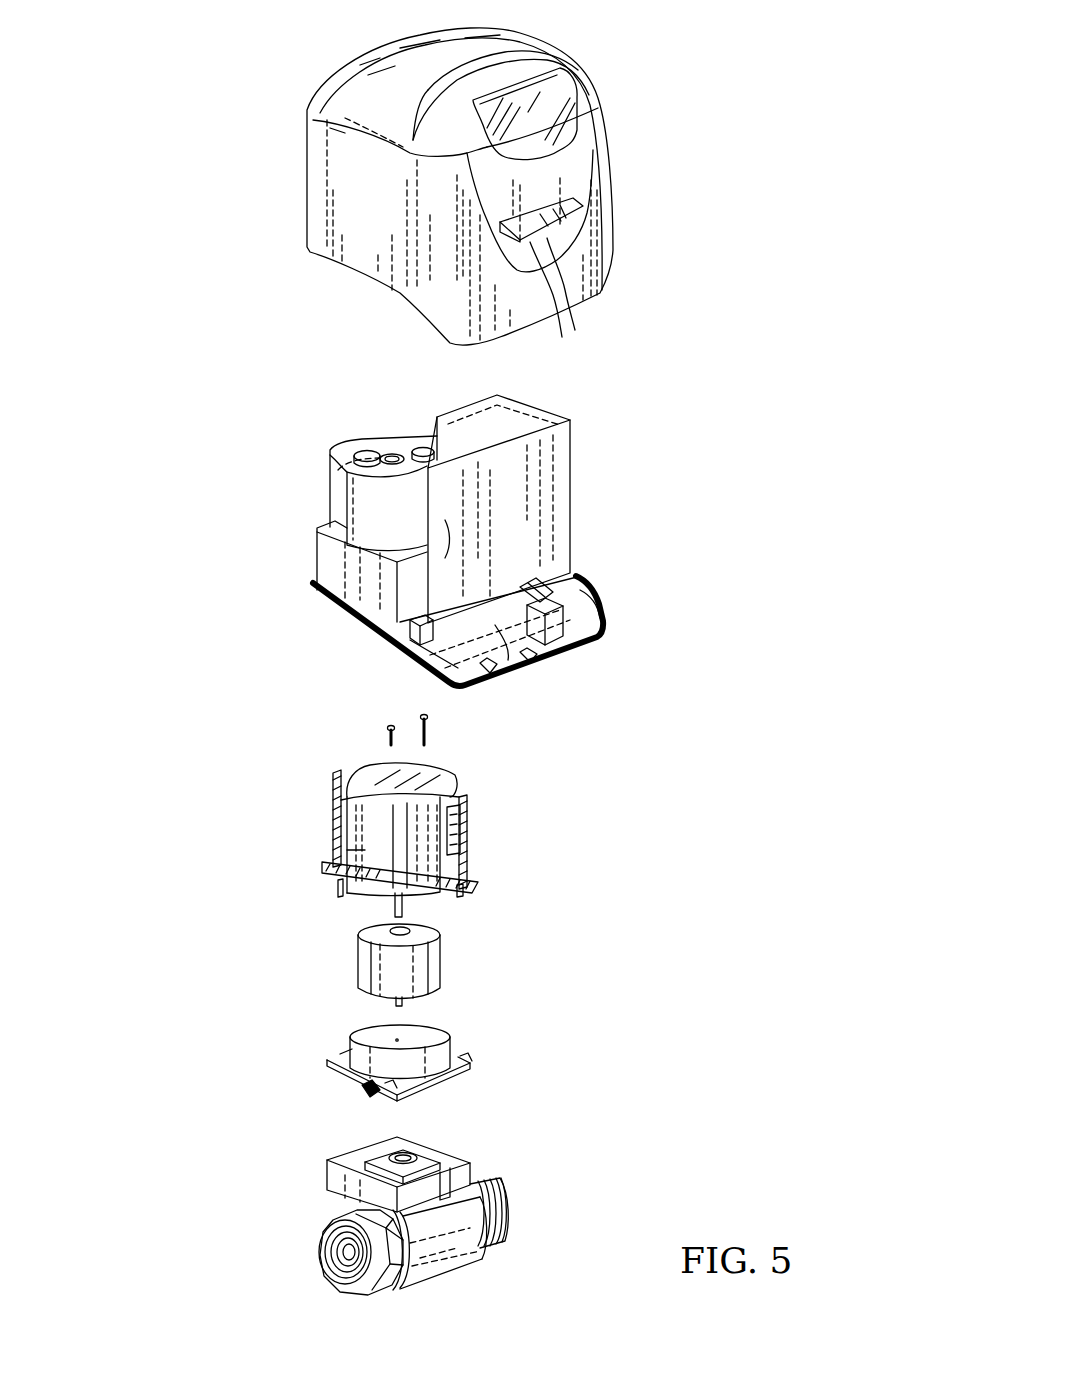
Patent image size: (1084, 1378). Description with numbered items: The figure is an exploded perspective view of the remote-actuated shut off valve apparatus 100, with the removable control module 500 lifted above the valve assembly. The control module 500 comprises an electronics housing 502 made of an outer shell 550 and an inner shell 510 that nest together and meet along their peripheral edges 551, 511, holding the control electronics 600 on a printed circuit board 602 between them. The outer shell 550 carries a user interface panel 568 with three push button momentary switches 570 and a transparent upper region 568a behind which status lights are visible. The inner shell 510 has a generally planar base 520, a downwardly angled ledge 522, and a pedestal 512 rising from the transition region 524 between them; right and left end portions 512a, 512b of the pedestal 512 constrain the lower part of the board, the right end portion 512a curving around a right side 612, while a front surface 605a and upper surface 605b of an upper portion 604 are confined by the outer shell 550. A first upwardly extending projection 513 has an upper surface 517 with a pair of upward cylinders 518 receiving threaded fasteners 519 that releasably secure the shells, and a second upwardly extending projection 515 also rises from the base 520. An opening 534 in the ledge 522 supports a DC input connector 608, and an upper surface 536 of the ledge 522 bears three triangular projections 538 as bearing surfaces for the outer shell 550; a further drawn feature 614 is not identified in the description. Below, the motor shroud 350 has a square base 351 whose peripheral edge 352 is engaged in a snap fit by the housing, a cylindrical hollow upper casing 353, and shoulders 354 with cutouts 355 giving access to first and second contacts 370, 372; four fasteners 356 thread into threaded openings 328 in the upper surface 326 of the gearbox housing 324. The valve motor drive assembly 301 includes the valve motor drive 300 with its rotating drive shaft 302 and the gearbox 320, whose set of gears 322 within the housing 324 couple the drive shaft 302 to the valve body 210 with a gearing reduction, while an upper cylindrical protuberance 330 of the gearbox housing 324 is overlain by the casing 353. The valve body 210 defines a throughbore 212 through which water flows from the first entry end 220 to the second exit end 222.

The remote-actuated shut off valve apparatus 100 is at (672, 37).
The removable control module 500 is at (623, 197).
The electronics housing 502 is at (623, 253).
The outer shell 550 is at (627, 150).
The peripheral edge of outer shell 551 is at (350, 268).
The user interface panel 568 is at (577, 143).
The upper region of user interface panel 568a is at (560, 92).
The push button momentary switches 570 is at (563, 337).
The inner shell 510 is at (583, 455).
The second upwardly extending projection 515 is at (533, 403).
The peripheral edge of inner shell 511 is at (560, 663).
The pedestal 512 is at (447, 690).
The right end portion of pedestal 512a is at (593, 587).
The left end portion of pedestal 512b is at (407, 640).
The first upwardly extending projection 513 is at (340, 492).
The upper surface of first projection 517 is at (380, 453).
The upward cylinders 518 is at (420, 450).
The threaded fasteners 519 is at (418, 718).
The base 520 is at (340, 607).
The downwardly angled ledge 522 is at (505, 690).
The transition region 524 is at (400, 637).
The opening 534 is at (540, 670).
The upper surface of angled ledge 536 is at (587, 630).
The triangular projections 538 is at (553, 667).
The control electronics 600 is at (550, 512).
The printed circuit board 602 is at (560, 488).
The upper portion of PC board 604 is at (440, 497).
The front surface of PC board 605a is at (357, 547).
The upper surface of PC board 605b is at (480, 403).
The DC input connector 608 is at (523, 593).
The right side of PC board 612 is at (573, 545).
The groove 614 is at (453, 647).
The drive motor shroud 350 is at (302, 817).
The base of motor shroud 351 is at (383, 900).
The peripheral edge of shroud base 352 is at (470, 870).
The cylindrical hollow upper casing 353 is at (367, 853).
The shoulders 354 is at (340, 802).
The cutout 355 is at (340, 770).
The fasteners 356 is at (340, 885).
The first contact 370 is at (470, 803).
The second contact 372 is at (348, 765).
The valve motor drive 300 is at (350, 962).
The valve motor drive assembly 301 is at (473, 997).
The drive shaft 302 is at (393, 993).
The gearbox 320 is at (333, 1077).
The set of gears 322 is at (370, 1093).
The gearbox housing 324 is at (340, 1173).
The upper surface of gearbox housing 326 is at (343, 1058).
The threaded openings 328 is at (473, 1067).
The upper cylindrical protuberance 330 is at (450, 1043).
The valve body 210 is at (437, 1266).
The throughbore 212 is at (325, 1275).
The first entry end 220 is at (320, 1243).
The second exit end 222 is at (510, 1207).